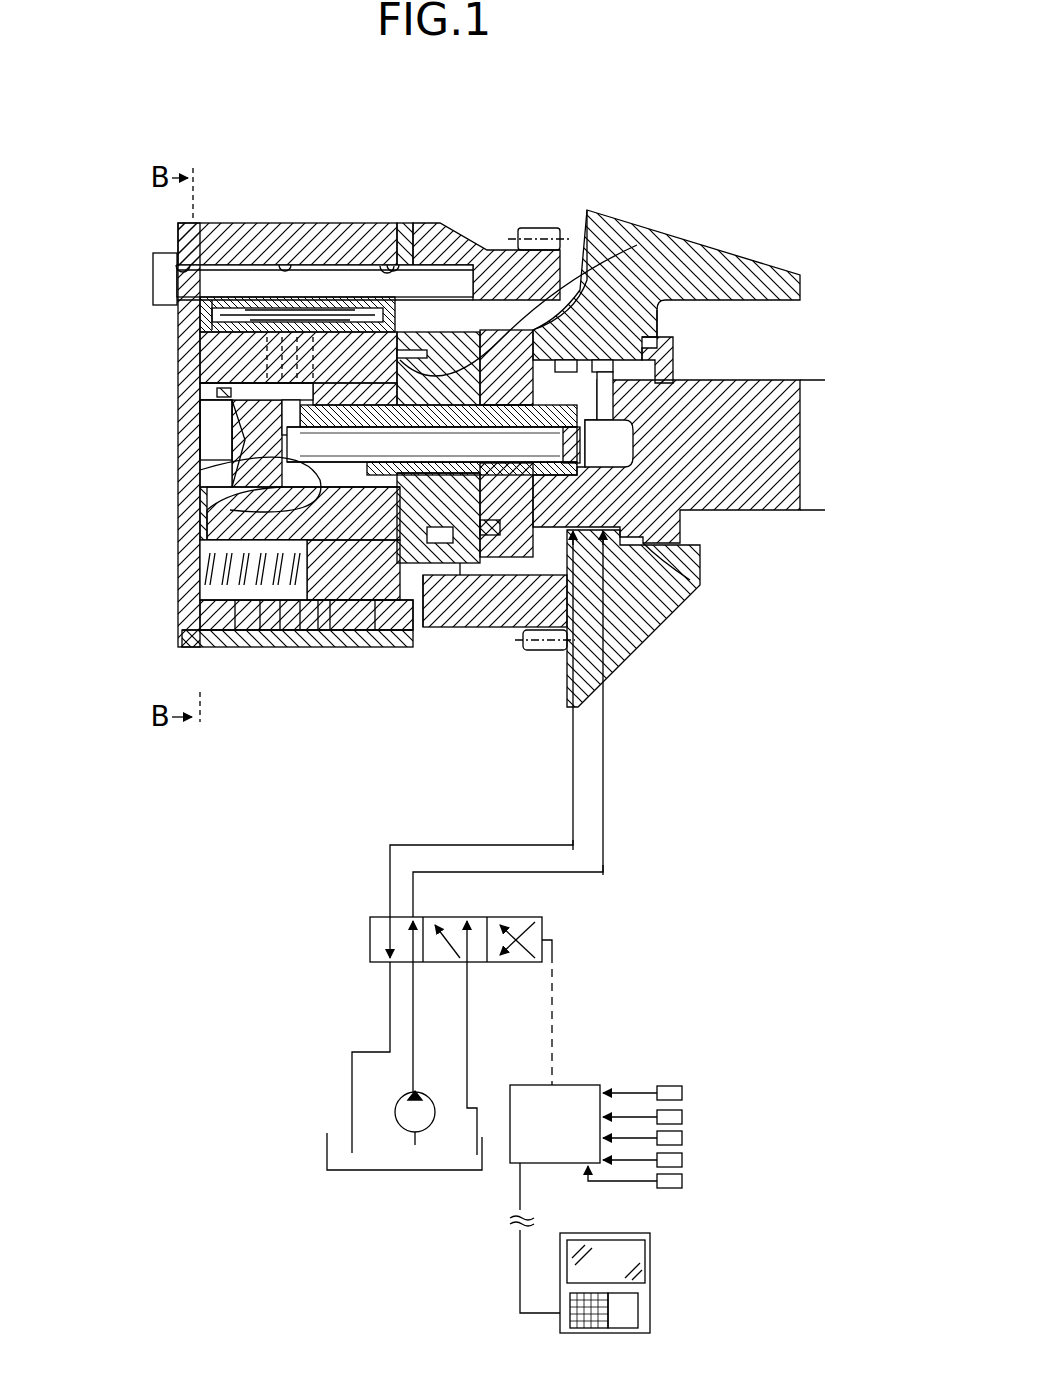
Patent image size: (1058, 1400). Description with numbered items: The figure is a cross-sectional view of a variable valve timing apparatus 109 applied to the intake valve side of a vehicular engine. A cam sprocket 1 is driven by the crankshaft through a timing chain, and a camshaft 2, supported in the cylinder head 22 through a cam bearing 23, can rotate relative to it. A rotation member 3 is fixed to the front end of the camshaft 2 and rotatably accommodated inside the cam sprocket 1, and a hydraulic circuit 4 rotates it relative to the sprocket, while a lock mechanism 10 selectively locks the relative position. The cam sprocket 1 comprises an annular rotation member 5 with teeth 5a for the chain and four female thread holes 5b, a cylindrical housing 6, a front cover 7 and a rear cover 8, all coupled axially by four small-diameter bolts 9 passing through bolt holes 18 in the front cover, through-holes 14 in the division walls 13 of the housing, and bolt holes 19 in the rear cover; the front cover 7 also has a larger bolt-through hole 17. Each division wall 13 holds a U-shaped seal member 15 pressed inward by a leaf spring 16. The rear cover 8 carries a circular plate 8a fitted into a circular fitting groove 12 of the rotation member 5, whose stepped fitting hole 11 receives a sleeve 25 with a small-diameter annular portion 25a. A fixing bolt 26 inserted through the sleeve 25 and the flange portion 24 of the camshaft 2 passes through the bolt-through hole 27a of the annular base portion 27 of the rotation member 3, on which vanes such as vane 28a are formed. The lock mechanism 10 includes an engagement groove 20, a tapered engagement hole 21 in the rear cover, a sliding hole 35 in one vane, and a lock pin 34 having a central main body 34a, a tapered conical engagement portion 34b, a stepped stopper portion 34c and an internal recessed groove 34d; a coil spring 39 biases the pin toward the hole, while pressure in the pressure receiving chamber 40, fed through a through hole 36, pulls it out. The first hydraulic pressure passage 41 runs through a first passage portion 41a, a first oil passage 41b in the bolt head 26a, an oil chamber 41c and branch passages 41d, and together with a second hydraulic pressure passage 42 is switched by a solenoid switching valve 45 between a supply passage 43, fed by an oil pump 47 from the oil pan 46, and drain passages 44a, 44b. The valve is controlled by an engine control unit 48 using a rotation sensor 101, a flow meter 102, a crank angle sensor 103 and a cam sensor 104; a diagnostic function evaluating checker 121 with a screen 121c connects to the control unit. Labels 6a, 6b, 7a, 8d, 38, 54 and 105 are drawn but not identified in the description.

The variable valve timing apparatus 109 is at (485, 162).
The cam sprocket 1 is at (297, 221).
The camshaft 2 is at (772, 515).
The rotation member 3 is at (196, 525).
The hydraulic circuit 4 is at (612, 830).
The rotation member 5 is at (478, 245).
The teeth 5a is at (540, 228).
The female thread holes 5b is at (589, 275).
The housing 6 is at (368, 240).
The housing portion 6a is at (198, 370).
The housing wall 6b is at (600, 300).
The front cover 7 is at (190, 628).
The end plate portion 7a is at (205, 388).
The rear cover 8 is at (422, 560).
The circular plate 8a is at (432, 612).
The piston inner portion 8d is at (402, 476).
The small-diameter bolts 9 is at (160, 280).
The lock mechanism 10 is at (378, 618).
The fitting hole 11 is at (462, 590).
The circular fitting groove 12 is at (406, 262).
The division walls 13 is at (252, 305).
The through-holes 14 is at (270, 320).
The seal member 15 is at (212, 313).
The leaf spring 16 is at (215, 298).
The bolt-through hole 17 is at (215, 418).
The bolt holes 18 is at (177, 262).
The bolt holes 19 is at (388, 262).
The engagement groove 20 is at (555, 480).
The tapered engagement hole 21 is at (420, 480).
The cylinder head 22 is at (672, 570).
The cam bearing 23 is at (662, 330).
The flange portion 24 is at (532, 652).
The sleeve 25 is at (492, 560).
The small-diameter annular portion 25a is at (490, 470).
The fixing bolt 26 is at (340, 360).
The head 26a is at (216, 394).
The annular base portion 27 is at (332, 632).
The bolt-through hole 27a is at (228, 486).
The vane 28a is at (215, 640).
The lock pin 34 is at (318, 615).
The central main body 34a is at (215, 498).
The tapered conical engagement portion 34b is at (482, 600).
The stepped stopper portion 34c is at (235, 632).
The internal recessed groove 34d is at (262, 632).
The sliding hole 35 is at (300, 632).
The through hole 36 is at (280, 615).
The oil passage 38 is at (535, 295).
The coil spring 39 is at (215, 583).
The pressure receiving chamber 40 is at (220, 545).
The first hydraulic pressure passage 41 is at (606, 850).
The first passage portion 41a is at (625, 384).
The first oil passage 41b is at (668, 375).
The oil chamber 41c is at (300, 500).
The branch passages 41d is at (280, 355).
The second hydraulic pressure passage 42 is at (570, 810).
The supply passage 43 is at (416, 1000).
The drain passage 44a is at (390, 985).
The drain passage 44b is at (470, 1018).
The solenoid switching valve 45 is at (472, 914).
The oil pan 46 is at (320, 1145).
The oil pump 47 is at (430, 1100).
The engine control unit 48 is at (580, 1084).
The solenoid 54 is at (528, 922).
The rotation sensor 101 is at (682, 1098).
The flow meter 102 is at (682, 1117).
The crank angle sensor 103 is at (682, 1138).
The cam sensor 104 is at (682, 1160).
The sensor 105 is at (682, 1185).
The diagnostic function evaluating checker 121 is at (650, 1258).
The screen 121c is at (605, 1250).